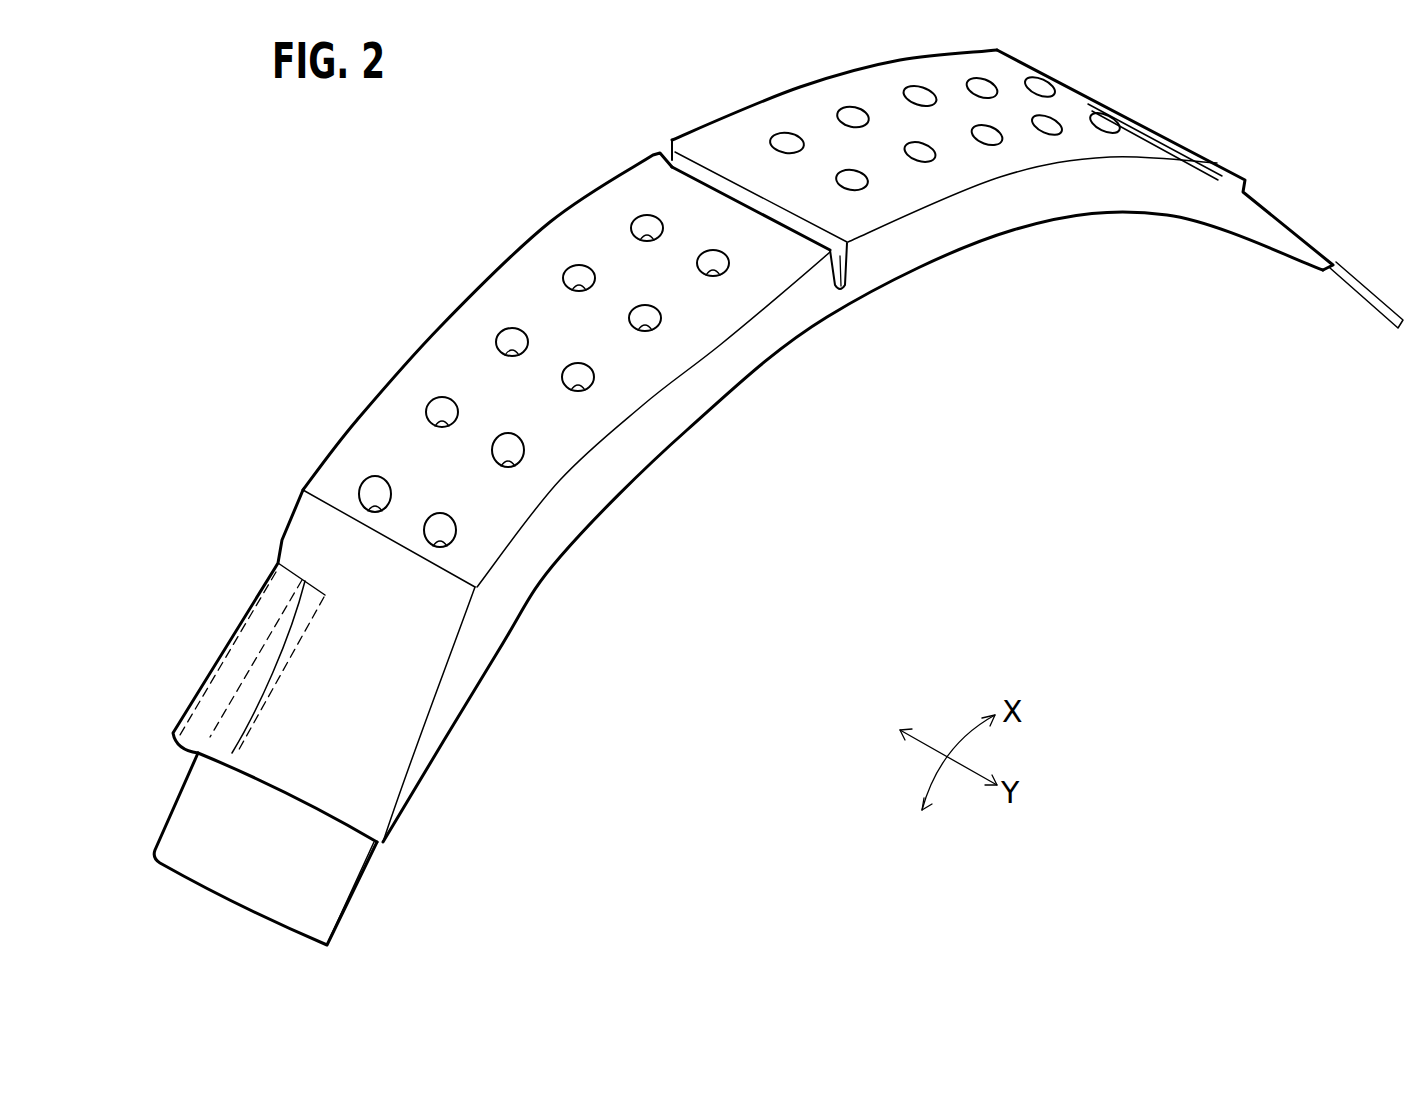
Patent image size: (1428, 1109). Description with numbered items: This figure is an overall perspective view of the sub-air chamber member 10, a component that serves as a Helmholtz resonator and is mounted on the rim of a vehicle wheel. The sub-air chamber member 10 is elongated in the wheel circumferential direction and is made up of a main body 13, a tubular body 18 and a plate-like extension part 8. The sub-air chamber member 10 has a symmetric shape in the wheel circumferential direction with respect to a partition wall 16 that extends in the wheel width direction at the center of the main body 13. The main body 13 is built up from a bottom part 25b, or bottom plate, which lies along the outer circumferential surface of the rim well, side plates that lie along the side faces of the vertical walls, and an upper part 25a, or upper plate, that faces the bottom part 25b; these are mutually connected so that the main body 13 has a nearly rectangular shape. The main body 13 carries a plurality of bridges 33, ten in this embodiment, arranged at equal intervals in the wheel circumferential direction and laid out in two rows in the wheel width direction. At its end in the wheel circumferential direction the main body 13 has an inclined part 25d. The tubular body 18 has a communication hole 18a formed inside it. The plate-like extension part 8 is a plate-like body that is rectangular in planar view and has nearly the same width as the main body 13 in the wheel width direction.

The plate-like extension part 8 is at (258, 867).
The sub-air chamber member 10 is at (569, 179).
The main body 13 is at (690, 303).
The partition wall 16 is at (850, 270).
The tubular body 18 is at (223, 680).
The communication hole 18a is at (182, 752).
The upper part 25a is at (500, 520).
The bottom part 25b is at (674, 461).
The inclined part 25d is at (393, 637).
The bridges 33 is at (918, 150).